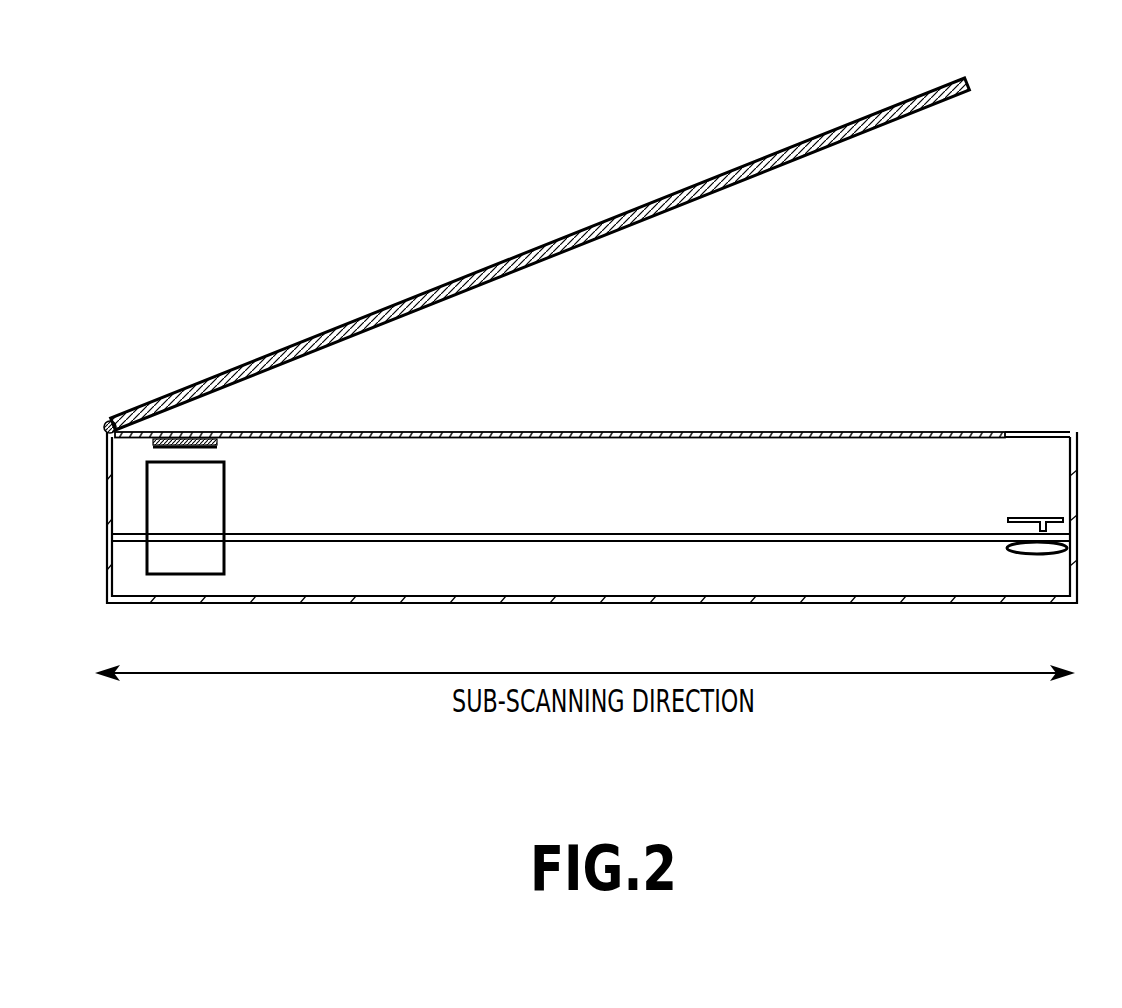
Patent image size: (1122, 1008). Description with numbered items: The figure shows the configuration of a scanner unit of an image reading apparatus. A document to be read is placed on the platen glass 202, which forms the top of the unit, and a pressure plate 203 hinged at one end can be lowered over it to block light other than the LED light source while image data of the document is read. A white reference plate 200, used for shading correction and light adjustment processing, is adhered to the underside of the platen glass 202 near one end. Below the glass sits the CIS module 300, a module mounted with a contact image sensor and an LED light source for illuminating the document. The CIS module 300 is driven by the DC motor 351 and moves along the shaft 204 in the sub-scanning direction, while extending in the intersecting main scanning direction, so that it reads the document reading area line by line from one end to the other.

The pressure plate 203 is at (873, 58).
The platen glass 202 is at (588, 430).
The white reference plate 200 is at (215, 443).
The CIS module 300 is at (224, 506).
The shaft 204 is at (852, 532).
The DC motor 351 is at (1008, 550).